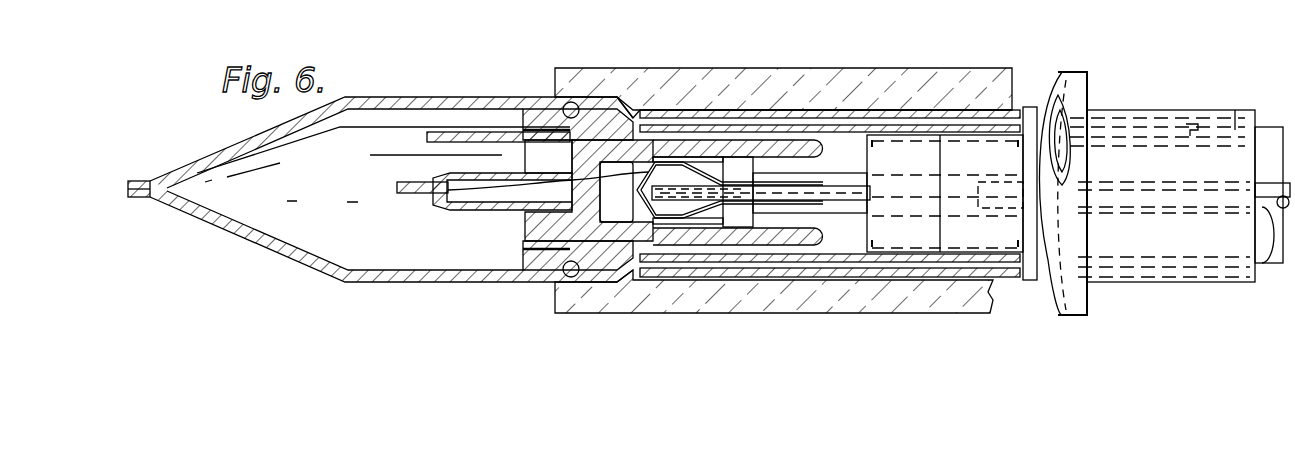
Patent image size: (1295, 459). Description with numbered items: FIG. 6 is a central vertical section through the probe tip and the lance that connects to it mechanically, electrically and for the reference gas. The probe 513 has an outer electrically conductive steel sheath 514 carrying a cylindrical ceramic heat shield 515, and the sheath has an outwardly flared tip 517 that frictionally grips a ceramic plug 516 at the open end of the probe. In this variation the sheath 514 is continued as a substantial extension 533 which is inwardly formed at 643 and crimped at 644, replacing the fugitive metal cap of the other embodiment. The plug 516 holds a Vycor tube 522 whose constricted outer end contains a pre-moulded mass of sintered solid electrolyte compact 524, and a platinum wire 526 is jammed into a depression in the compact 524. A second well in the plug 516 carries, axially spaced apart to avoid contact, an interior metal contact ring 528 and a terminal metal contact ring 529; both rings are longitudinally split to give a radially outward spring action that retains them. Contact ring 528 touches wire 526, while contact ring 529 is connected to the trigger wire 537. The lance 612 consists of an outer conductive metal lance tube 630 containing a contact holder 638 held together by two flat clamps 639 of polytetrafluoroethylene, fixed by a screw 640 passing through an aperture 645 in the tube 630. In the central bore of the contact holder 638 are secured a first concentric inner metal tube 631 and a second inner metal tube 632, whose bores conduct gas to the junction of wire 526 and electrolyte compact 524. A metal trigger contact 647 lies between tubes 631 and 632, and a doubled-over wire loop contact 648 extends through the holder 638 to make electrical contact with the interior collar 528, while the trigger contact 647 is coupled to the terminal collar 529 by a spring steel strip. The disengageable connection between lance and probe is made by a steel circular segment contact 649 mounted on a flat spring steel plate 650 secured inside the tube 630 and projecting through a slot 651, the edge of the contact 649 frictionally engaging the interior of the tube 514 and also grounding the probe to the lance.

The probe 513 is at (1100, 319).
The outer electrically conductive metal sheath 514 is at (667, 107).
The heat shield 515 is at (780, 60).
The plug 516 is at (600, 260).
The outwardly flared tip 517 is at (622, 100).
The Vycor tube 522 is at (468, 206).
The sintered solid electrolyte compact 524 is at (403, 191).
The platinum wire 526 is at (505, 174).
The interior metal contact ring 528 is at (703, 222).
The terminal metal contact ring 529 is at (800, 234).
The extension of tube 533 is at (527, 97).
The trigger wire 537 is at (457, 128).
The lance 612 is at (1217, 102).
The lance tube 630 is at (1013, 262).
The first concentric inner metal tube 631 is at (1283, 187).
The second inner metal tube 632 is at (683, 194).
The contact holder 638 is at (920, 230).
The flat clamps 639 is at (895, 253).
The screw 640 is at (938, 128).
The inwardly formed portion 643 is at (207, 219).
The crimp 644 is at (148, 180).
The aperture 645 is at (963, 130).
The trigger contact 647 is at (787, 187).
The wire loop contact 648 is at (697, 224).
The circular segment contact 649 is at (1200, 128).
The flat spring steel plate 650 is at (1097, 145).
The slot 651 is at (1232, 128).